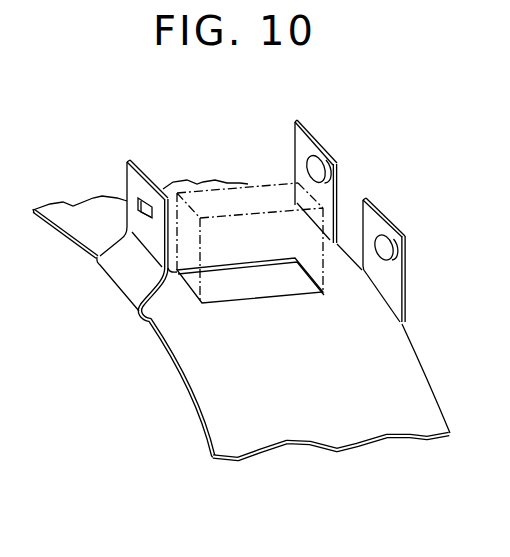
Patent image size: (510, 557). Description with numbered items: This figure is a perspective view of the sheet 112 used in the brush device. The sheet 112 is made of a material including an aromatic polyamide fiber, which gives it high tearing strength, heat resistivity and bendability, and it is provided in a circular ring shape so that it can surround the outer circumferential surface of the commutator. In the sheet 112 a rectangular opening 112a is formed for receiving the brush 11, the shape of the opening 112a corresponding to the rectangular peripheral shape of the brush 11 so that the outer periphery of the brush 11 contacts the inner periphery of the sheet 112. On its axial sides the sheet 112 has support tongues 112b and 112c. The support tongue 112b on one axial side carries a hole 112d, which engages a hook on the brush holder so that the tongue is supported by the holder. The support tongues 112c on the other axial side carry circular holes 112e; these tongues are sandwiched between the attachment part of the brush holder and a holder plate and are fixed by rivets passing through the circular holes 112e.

The brush 11 is at (219, 186).
The sheet 112 is at (238, 433).
The rectangular opening 112a is at (245, 298).
The support tongue 112b is at (136, 176).
The support tongues 112c is at (333, 177).
The hole 112d is at (139, 201).
The circular holes 112e is at (312, 172).